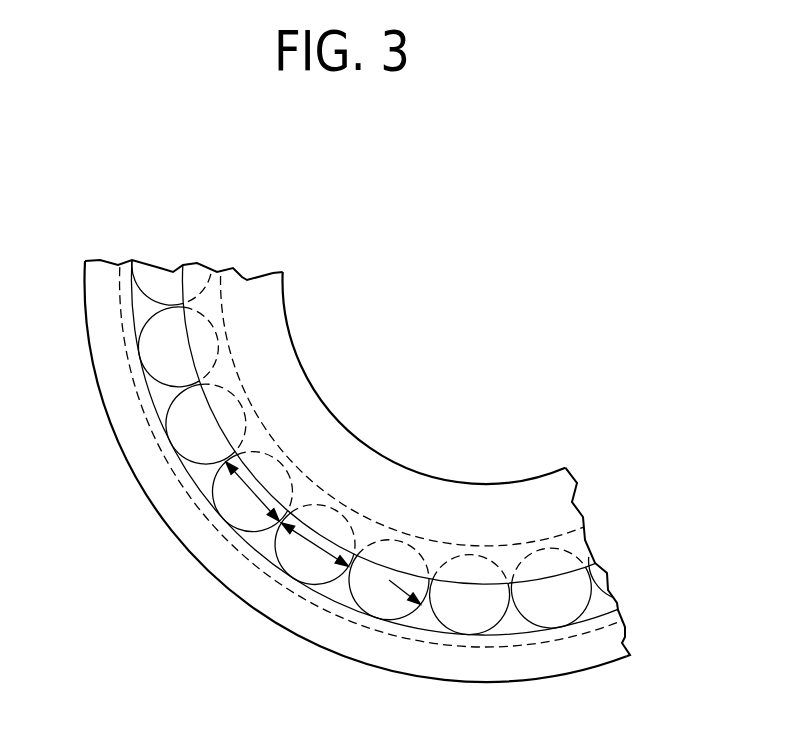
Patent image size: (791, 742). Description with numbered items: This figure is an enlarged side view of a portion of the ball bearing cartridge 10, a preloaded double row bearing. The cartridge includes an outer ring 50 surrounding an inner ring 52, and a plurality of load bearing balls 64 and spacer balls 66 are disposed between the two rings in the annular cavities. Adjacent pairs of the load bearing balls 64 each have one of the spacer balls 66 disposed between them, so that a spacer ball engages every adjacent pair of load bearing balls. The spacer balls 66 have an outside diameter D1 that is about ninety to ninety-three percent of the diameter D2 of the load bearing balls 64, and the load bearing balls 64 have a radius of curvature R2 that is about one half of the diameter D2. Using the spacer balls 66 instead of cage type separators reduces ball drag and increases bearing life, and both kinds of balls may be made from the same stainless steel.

The ball bearing cartridge 10 is at (532, 262).
The outer ring 50 is at (98, 268).
The inner ring 52 is at (241, 287).
The load bearing balls 64 is at (175, 392).
The spacer balls 66 is at (142, 311).
The outside diameter of the spacer balls D1 is at (318, 547).
The diameter of the load bearing balls D2 is at (256, 492).
The radius of curvature of the load bearing balls R2 is at (395, 580).